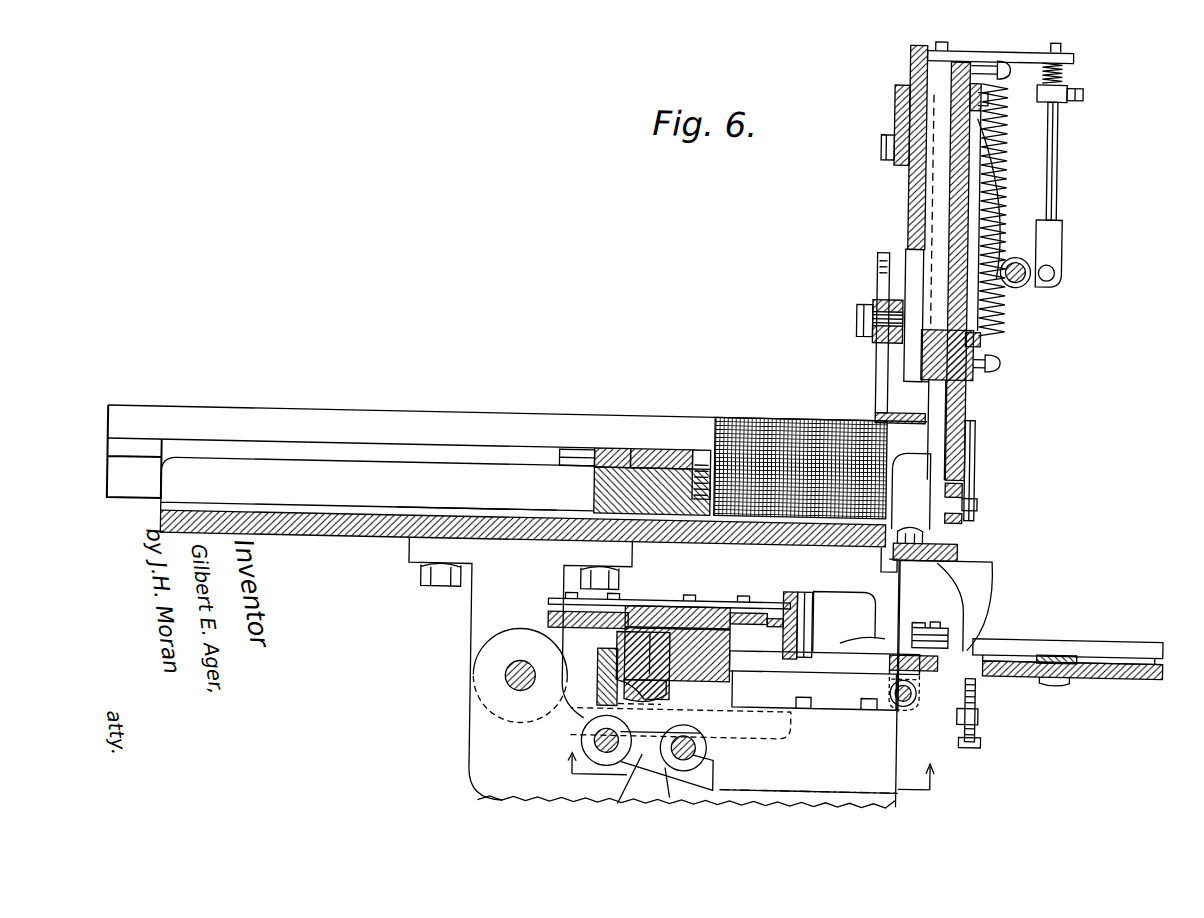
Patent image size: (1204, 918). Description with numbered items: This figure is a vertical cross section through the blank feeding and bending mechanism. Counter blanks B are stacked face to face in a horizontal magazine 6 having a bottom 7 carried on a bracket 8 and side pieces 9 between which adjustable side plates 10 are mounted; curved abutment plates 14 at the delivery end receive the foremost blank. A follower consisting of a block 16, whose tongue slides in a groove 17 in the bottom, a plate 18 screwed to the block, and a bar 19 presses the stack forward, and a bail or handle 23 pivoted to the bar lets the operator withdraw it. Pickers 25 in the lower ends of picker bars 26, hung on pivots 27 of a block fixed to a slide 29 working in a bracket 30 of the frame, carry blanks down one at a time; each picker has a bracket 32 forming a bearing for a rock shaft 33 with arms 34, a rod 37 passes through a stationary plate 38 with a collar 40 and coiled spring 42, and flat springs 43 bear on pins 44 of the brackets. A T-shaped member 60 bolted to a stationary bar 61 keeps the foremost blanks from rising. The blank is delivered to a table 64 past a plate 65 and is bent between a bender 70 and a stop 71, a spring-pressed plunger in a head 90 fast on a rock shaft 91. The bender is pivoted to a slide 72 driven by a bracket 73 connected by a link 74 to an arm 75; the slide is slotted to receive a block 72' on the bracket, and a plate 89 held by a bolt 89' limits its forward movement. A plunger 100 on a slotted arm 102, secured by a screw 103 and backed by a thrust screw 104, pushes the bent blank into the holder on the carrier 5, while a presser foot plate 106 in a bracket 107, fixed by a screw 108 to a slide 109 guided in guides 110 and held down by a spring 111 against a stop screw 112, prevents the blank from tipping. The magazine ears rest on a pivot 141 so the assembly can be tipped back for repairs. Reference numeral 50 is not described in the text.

The carrier 5 is at (1113, 673).
The magazine 6 is at (477, 492).
The bottom 7 is at (325, 536).
The bracket 8 is at (492, 616).
The side pieces 9 is at (134, 486).
The adjustable side plates 10 is at (178, 504).
The abutment plates 14 is at (977, 467).
The block 16 is at (600, 499).
The groove 17 is at (396, 519).
The plate 18 is at (658, 456).
The bar 19 is at (612, 457).
The bail or handle 23 is at (525, 464).
The pickers 25 is at (895, 487).
The picker bars 26 is at (904, 214).
The pivots 27 is at (901, 176).
The slide 29 is at (905, 72).
The bracket 30 is at (923, 386).
The bracket 32 is at (1030, 286).
The rock shaft 33 is at (1020, 284).
The arms 34 is at (1032, 262).
The rod 37 is at (1056, 175).
The stationary plate 38 is at (1070, 56).
The collar 40 is at (1061, 96).
The coiled spring 42 is at (1060, 71).
The flat springs 43 is at (984, 192).
The pins 44 is at (998, 260).
The block 50 is at (890, 111).
The T-shaped member 60 is at (882, 373).
The stationary bar 61 is at (877, 345).
The table 64 is at (843, 671).
The plate 65 is at (884, 564).
The bender 70 is at (844, 622).
The stop or abutment 71 is at (910, 633).
The slide 72 is at (693, 624).
The block 72' is at (682, 622).
The bracket 73 is at (612, 678).
The link 74 is at (637, 799).
The arm 75 is at (708, 782).
The plate 89 is at (572, 633).
The bolt 89' is at (657, 590).
The head 90 is at (902, 665).
The rock shaft 91 is at (913, 712).
The plunger 100 is at (774, 611).
The slotted arm 102 is at (784, 607).
The screw 103 is at (742, 598).
The thrust screw 104 is at (787, 628).
The plate 106 is at (980, 545).
The bracket 107 is at (975, 520).
The screw 108 is at (971, 495).
The slide 109 is at (972, 412).
The guides 110 is at (990, 126).
The spring 111 is at (978, 170).
The stop screw 112 is at (1000, 341).
The pivot 141 is at (512, 689).
The counter blank B is at (781, 423).